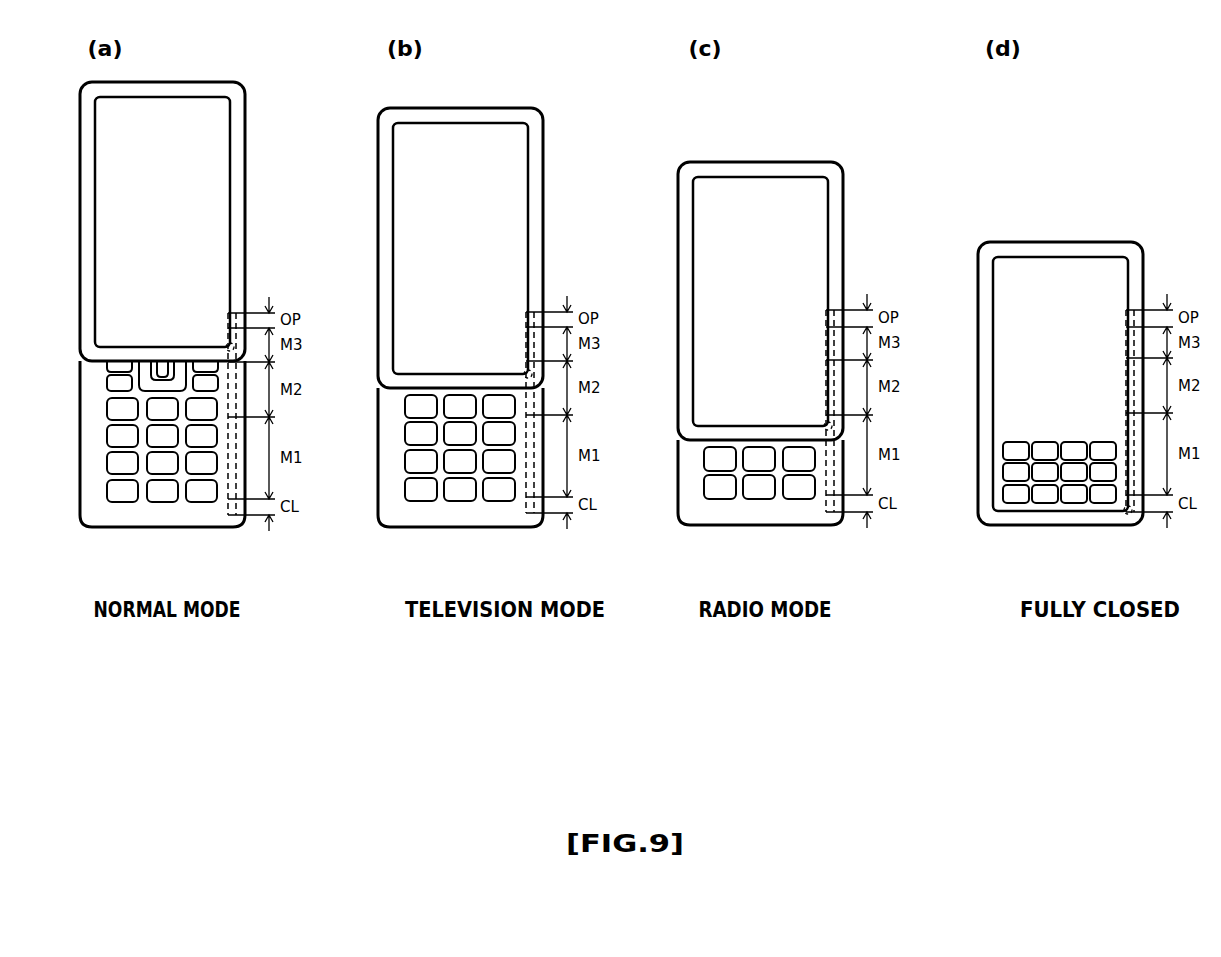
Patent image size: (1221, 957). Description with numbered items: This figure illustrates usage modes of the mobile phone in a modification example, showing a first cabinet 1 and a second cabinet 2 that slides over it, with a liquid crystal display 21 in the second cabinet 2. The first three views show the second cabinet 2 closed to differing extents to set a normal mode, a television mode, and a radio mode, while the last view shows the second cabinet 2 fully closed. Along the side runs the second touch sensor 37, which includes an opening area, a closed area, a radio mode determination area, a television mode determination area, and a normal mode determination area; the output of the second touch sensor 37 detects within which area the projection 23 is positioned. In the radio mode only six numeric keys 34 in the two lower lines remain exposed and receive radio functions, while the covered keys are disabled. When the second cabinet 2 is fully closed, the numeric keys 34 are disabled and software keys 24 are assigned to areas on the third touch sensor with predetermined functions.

The first cabinet 1 is at (80, 377).
The second cabinet 2 is at (245, 265).
The liquid crystal display 21 is at (220, 155).
The projection 23 is at (228, 343).
The software keys 24 is at (1003, 438).
The numeric keys 34 is at (105, 440).
The second touch sensor 37 is at (228, 516).